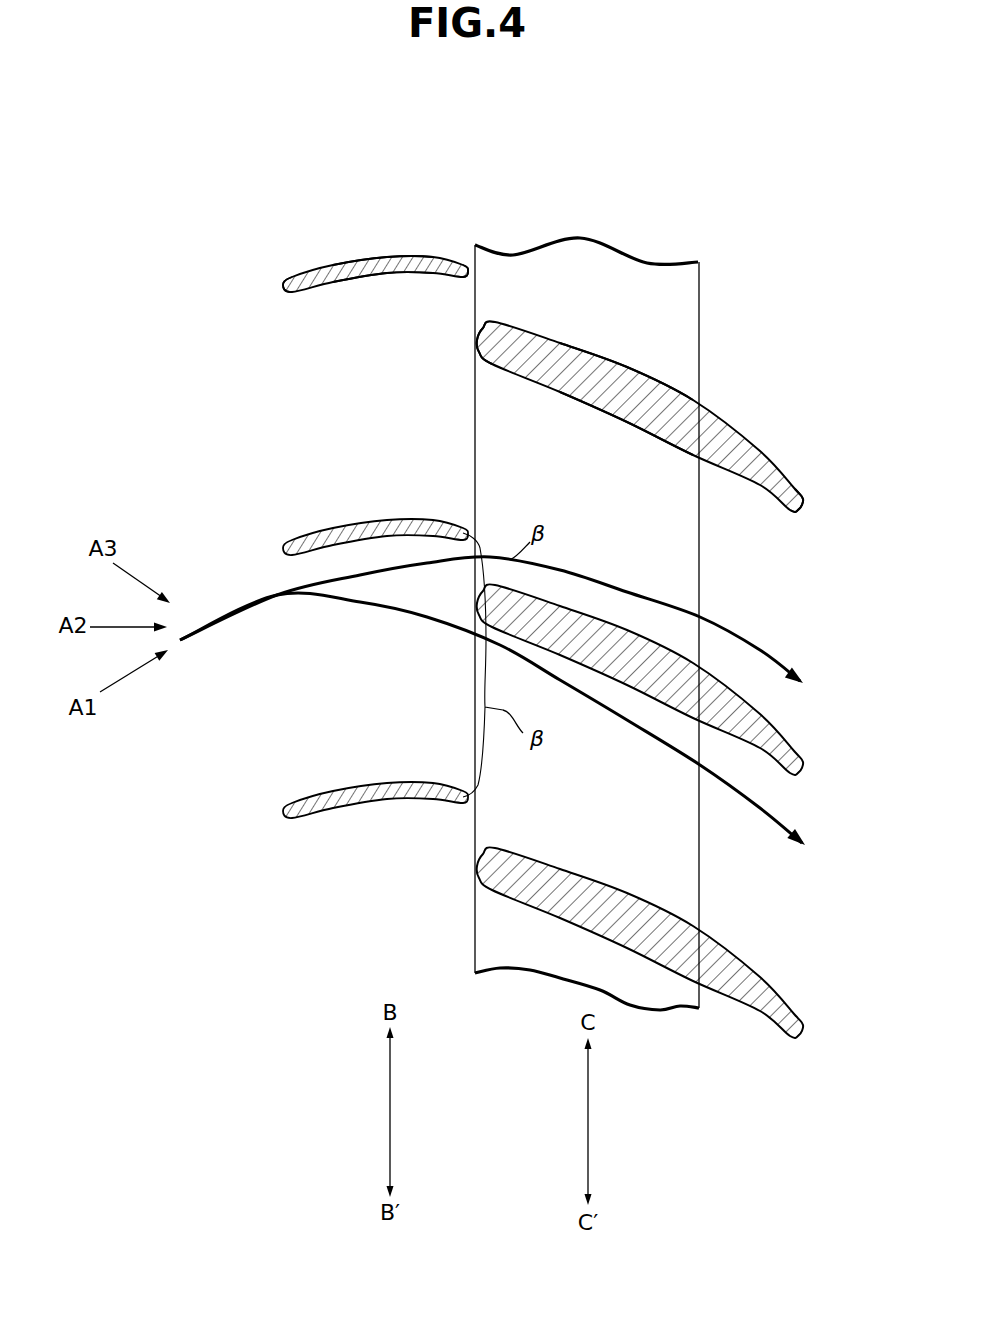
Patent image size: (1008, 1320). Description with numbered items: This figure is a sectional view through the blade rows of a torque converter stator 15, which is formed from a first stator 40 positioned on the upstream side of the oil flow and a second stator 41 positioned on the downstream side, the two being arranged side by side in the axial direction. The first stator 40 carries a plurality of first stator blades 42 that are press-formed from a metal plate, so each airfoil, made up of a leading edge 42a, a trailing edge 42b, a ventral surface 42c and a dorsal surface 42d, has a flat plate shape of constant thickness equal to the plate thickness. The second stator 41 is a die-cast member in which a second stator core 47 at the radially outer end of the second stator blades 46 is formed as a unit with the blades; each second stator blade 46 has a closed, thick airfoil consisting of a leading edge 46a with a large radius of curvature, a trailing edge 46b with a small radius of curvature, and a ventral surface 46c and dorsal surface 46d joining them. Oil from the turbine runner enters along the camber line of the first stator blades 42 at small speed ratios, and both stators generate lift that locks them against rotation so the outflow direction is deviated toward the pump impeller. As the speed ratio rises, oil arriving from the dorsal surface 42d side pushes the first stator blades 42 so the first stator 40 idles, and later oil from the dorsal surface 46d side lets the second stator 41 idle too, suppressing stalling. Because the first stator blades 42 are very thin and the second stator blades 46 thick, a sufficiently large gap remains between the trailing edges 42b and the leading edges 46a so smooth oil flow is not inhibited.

The stator 15 is at (535, 104).
The first stator 40 is at (394, 234).
The second stator 41 is at (551, 228).
The first stator blade 42 is at (326, 257).
The leading edge 42a is at (280, 290).
The trailing edge 42b is at (477, 270).
The ventral surface 42c is at (353, 275).
The dorsal surface 42d is at (373, 257).
The second stator blade 46 is at (686, 390).
The leading edge 46a is at (477, 337).
The trailing edge 46b is at (806, 499).
The ventral surface 46c is at (620, 413).
The dorsal surface 46d is at (642, 367).
The second stator core 47 is at (612, 272).